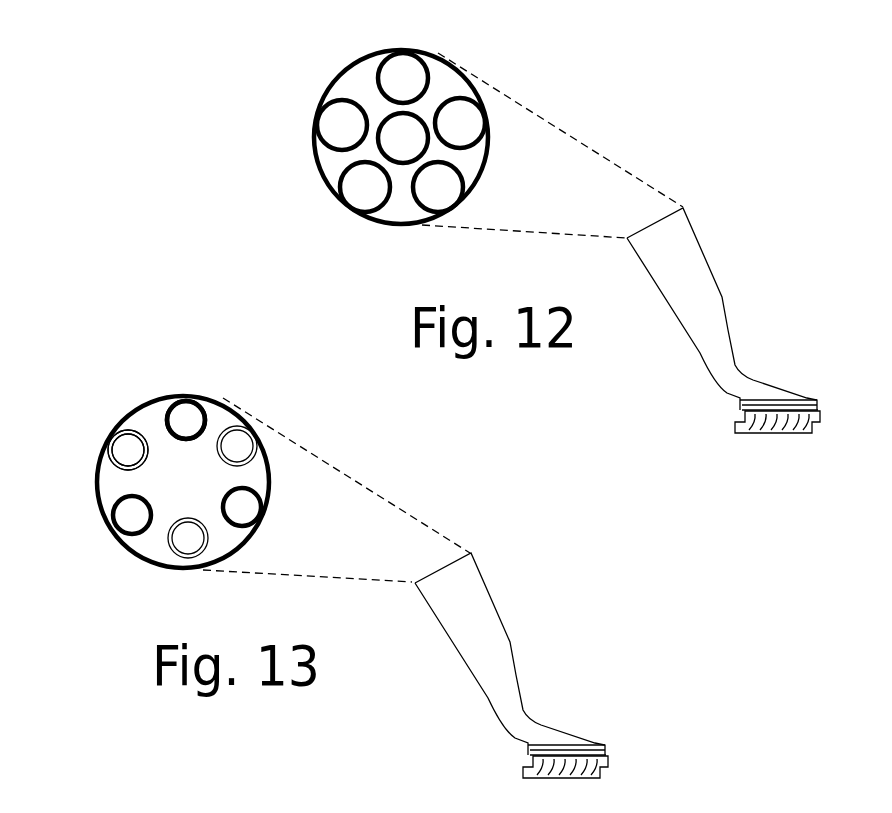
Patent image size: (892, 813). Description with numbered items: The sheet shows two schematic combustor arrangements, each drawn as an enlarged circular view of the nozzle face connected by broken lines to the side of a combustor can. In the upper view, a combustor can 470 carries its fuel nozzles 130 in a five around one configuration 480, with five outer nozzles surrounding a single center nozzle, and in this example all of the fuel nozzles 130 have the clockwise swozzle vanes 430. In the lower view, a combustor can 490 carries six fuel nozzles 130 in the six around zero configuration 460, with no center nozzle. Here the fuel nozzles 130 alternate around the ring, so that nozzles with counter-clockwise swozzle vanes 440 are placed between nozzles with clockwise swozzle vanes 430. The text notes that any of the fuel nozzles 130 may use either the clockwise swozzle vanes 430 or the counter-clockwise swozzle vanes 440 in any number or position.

In FIG. 12, the fuel nozzle 130 is at (378, 63).
In FIG. 13, the fuel nozzle 130 is at (160, 395).
In FIG. 12, the clockwise swozzle vanes 430 is at (472, 148).
In FIG. 13, the clockwise swozzle vanes 430 is at (187, 398).
In FIG. 13, the counter-clockwise swozzle vanes 440 is at (108, 452).
In FIG. 13, the six around zero configuration 460 is at (111, 551).
In FIG. 12, the combustor can 470 is at (713, 248).
In FIG. 12, the five around one configuration 480 is at (336, 214).
In FIG. 13, the combustor can 490 is at (500, 595).